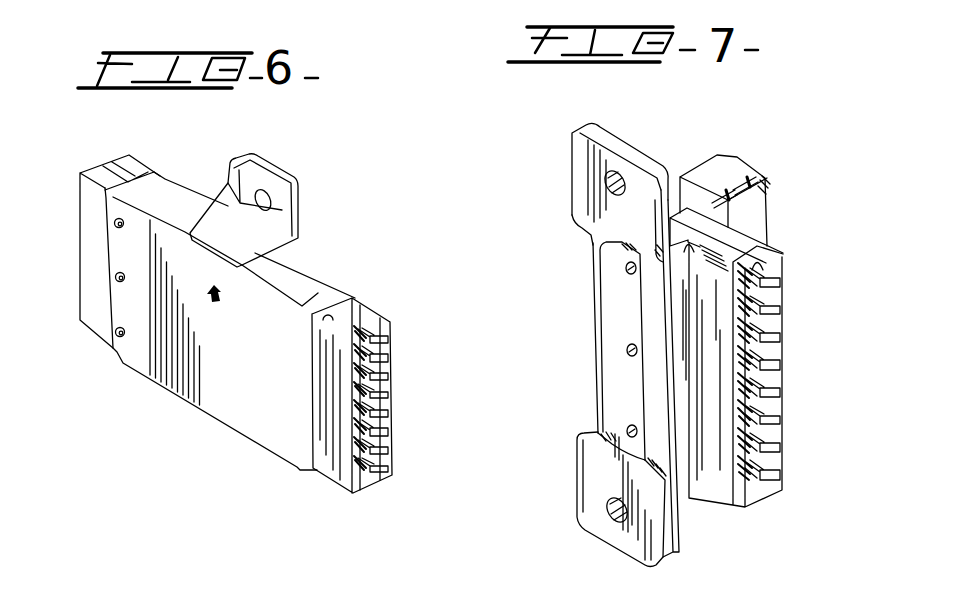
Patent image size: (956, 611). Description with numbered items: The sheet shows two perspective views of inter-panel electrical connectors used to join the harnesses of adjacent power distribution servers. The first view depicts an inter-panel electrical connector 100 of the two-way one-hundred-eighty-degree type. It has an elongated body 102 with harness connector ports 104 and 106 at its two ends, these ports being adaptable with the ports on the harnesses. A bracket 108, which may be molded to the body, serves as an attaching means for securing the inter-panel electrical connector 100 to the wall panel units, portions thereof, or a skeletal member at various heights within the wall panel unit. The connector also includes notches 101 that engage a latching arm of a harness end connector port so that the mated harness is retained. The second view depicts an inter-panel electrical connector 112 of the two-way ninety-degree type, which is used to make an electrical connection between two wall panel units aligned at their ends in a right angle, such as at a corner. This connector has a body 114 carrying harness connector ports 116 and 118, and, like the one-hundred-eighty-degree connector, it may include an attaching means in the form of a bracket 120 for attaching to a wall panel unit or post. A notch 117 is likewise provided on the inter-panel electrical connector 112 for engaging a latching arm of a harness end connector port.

In FIG. 6, the inter-panel electrical connector 100 is at (384, 194).
In FIG. 6, the notches 101 is at (157, 178).
In FIG. 6, the body 102 is at (207, 362).
In FIG. 6, the harness connector port 104 is at (77, 237).
In FIG. 6, the harness connector port 106 is at (393, 415).
In FIG. 6, the bracket 108 is at (262, 153).
In FIG. 7, the inter-panel electrical connector 112 is at (568, 548).
In FIG. 7, the body 114 is at (597, 352).
In FIG. 7, the harness connector port 116 is at (753, 176).
In FIG. 7, the notch 117 is at (670, 213).
In FIG. 7, the harness connector port 118 is at (782, 345).
In FIG. 7, the bracket 120 is at (617, 138).